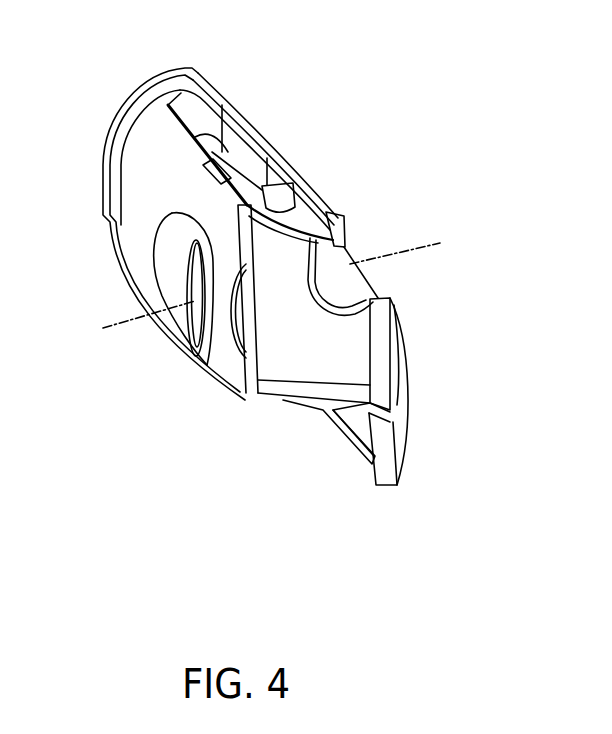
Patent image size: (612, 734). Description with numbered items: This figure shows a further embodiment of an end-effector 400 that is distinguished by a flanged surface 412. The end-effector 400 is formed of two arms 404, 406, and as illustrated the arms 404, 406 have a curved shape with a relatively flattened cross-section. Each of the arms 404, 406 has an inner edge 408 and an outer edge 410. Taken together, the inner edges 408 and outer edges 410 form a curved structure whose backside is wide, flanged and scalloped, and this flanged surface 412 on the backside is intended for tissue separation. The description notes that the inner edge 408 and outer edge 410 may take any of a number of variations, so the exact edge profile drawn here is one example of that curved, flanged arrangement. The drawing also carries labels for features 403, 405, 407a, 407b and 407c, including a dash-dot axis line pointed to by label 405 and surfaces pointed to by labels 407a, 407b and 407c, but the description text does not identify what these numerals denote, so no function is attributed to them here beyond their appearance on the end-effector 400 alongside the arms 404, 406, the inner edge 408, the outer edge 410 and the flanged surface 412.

The end-effector 400 is at (78, 55).
The housing rim 403 is at (256, 109).
The arm 404 is at (257, 397).
The pivot axis 405 is at (104, 323).
The arm 406 is at (408, 430).
The shoulder surface 407a is at (318, 230).
The neck surface 407b is at (380, 297).
The bracket surface 407c is at (320, 412).
The inner edge 408 is at (397, 352).
The outer edge 410 is at (393, 483).
The flanged surface 412 is at (347, 411).